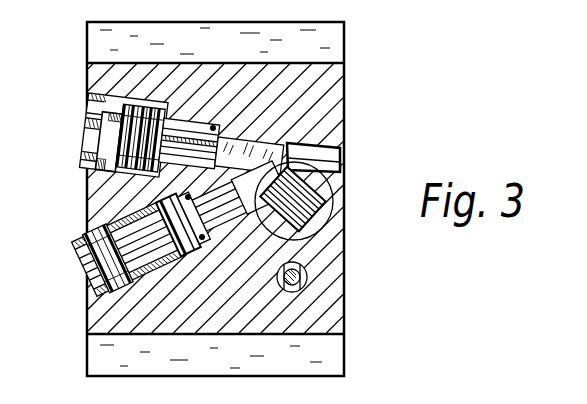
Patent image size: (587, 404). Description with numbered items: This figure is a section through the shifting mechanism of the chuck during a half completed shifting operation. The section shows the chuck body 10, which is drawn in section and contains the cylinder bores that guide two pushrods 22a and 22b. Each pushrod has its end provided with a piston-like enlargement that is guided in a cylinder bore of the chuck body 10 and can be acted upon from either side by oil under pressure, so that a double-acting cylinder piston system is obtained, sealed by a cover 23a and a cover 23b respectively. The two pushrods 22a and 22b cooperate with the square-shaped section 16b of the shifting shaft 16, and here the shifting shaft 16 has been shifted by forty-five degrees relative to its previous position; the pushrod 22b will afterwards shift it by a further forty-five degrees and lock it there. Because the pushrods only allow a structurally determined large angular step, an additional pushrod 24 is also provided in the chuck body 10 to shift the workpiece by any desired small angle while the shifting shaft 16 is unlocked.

The chuck body 10 is at (338, 93).
The shifting shaft 16 is at (335, 186).
The square-shaped section 16b is at (333, 215).
The pushrod 22a is at (195, 217).
The pushrod 22b is at (338, 131).
The cover 23a is at (103, 268).
The cover 23b is at (100, 140).
The additional pushrod 24 is at (300, 275).